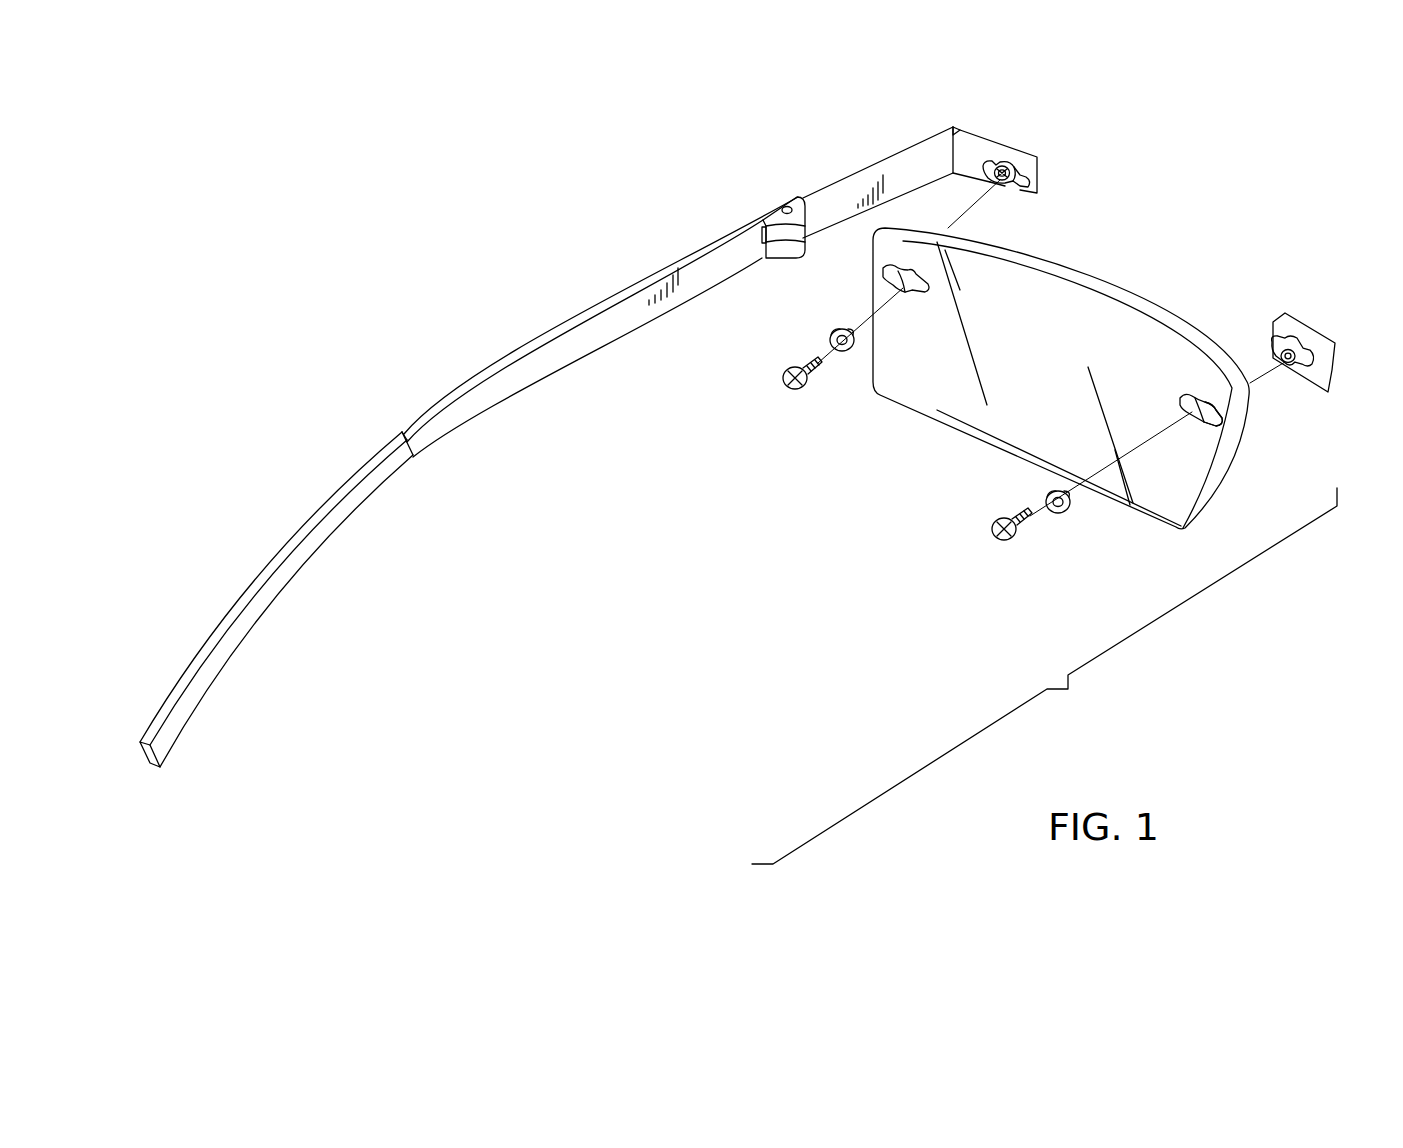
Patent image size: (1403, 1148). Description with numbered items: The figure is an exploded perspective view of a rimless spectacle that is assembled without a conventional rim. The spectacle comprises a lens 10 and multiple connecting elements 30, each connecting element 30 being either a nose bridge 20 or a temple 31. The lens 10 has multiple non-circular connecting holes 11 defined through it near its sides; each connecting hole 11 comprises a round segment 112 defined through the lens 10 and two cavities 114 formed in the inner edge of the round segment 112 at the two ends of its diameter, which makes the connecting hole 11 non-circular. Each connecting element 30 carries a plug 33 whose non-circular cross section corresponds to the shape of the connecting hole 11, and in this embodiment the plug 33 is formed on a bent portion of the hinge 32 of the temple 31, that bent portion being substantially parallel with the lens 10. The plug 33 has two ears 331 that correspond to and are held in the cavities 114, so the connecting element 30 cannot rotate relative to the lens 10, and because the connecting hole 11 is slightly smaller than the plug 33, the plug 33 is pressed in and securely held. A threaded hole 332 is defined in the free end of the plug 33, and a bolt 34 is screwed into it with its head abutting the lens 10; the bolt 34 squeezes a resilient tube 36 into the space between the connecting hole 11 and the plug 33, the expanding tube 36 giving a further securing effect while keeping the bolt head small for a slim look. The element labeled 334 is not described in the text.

The lens 10 is at (1112, 300).
The connecting hole 11 is at (905, 295).
The round segment 112 is at (1207, 426).
The cavities 114 is at (1182, 403).
The nose bridge 20 is at (1276, 316).
The connecting element 30 is at (772, 194).
The temple 31 is at (538, 353).
The hinge 32 is at (955, 128).
The plug 33 is at (973, 167).
The ears 331 is at (990, 178).
The threaded hole 332 is at (1007, 188).
The slot 334 is at (993, 160).
The bolt 34 is at (786, 386).
The resilient tube 36 is at (843, 352).